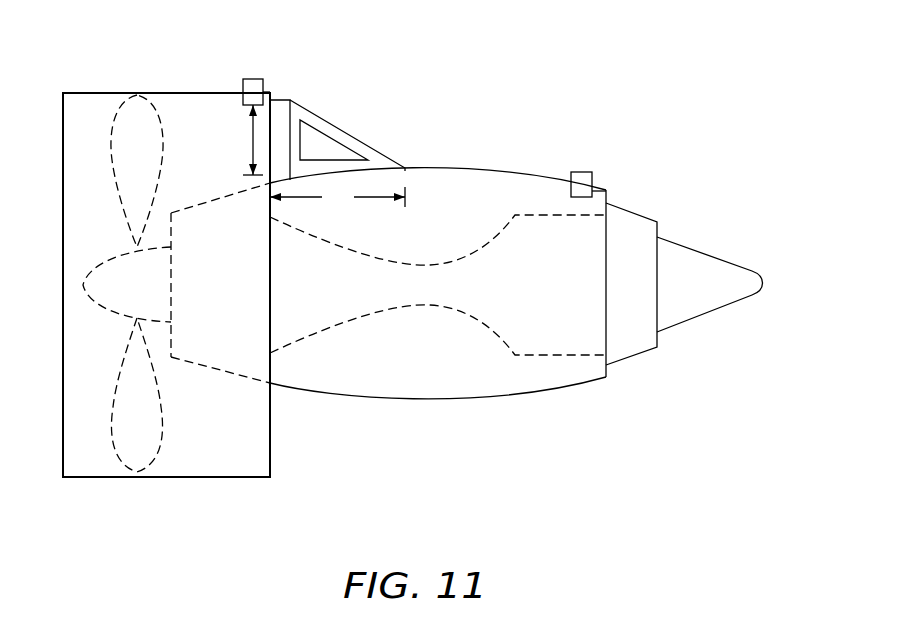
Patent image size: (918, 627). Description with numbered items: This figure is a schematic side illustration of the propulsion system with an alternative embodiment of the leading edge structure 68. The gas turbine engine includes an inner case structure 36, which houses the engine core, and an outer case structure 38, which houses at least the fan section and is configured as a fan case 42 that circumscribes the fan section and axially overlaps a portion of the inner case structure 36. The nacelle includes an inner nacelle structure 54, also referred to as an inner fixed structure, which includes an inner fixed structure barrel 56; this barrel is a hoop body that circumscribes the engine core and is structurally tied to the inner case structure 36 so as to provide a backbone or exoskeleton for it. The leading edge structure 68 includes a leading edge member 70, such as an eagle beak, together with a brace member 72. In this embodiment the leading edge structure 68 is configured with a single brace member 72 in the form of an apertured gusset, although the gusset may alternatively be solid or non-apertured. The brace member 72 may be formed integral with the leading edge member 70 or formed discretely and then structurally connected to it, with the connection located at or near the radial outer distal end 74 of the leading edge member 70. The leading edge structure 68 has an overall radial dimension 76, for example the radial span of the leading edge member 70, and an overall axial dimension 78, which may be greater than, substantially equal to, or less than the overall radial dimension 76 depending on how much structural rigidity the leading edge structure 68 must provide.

The inner case structure 36 is at (425, 305).
The outer case structure 38 is at (164, 327).
The fan case 42 is at (85, 477).
The inner nacelle structure 54 is at (516, 321).
The inner fixed structure barrel 56 is at (530, 395).
The leading edge structure 68 is at (330, 106).
The leading edge member 70 is at (293, 98).
The brace member 72 is at (362, 142).
The radial outer distal end 74 is at (280, 98).
The overall radial dimension 76 is at (253, 140).
The overall axial dimension 78 is at (337, 196).